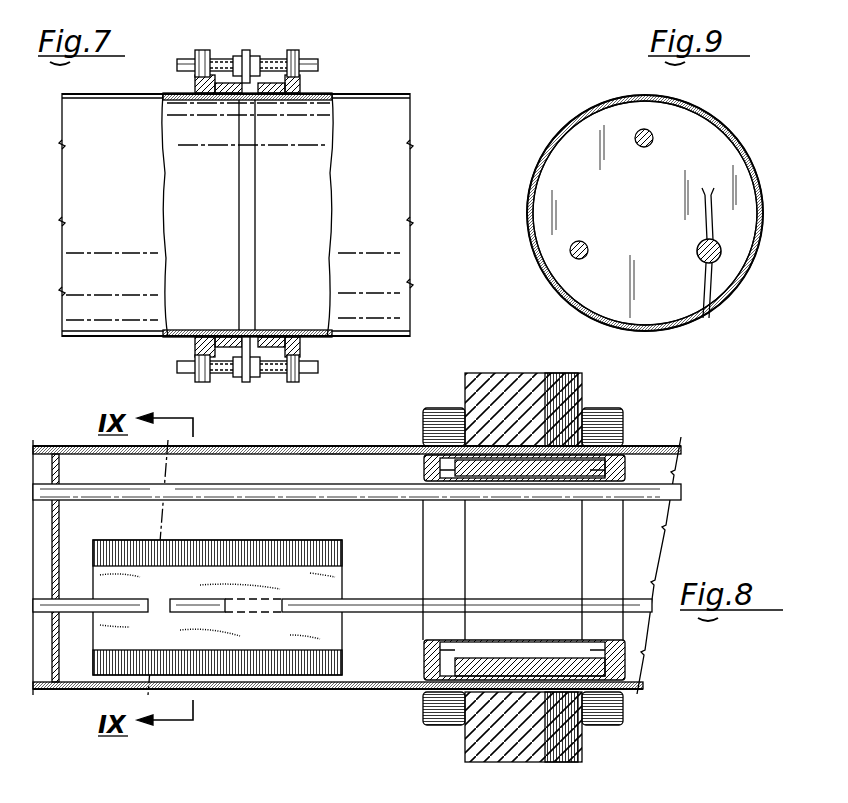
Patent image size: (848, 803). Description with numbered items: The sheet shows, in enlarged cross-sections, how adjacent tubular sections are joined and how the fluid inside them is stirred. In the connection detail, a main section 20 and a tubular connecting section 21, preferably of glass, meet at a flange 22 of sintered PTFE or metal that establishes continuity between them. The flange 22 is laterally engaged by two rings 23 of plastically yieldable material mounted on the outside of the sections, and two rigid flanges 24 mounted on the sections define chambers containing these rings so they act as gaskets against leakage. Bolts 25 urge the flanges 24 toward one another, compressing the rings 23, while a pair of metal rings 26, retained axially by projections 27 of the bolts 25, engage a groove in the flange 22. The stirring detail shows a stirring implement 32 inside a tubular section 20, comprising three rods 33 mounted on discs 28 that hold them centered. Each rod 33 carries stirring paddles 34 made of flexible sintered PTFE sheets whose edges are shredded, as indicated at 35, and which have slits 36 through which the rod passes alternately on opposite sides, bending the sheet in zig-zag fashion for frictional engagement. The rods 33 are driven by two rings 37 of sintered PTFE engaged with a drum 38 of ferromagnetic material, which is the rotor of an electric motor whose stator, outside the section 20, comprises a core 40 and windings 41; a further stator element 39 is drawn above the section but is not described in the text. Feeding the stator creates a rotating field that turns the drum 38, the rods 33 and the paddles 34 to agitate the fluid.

In FIG. 7, the main section 20 is at (108, 106).
In FIG. 8, the main section 20 is at (662, 446).
In FIG. 9, the main section 20 is at (594, 109).
In FIG. 7, the tubular connecting section 21 is at (400, 112).
In FIG. 7, the flange 22 is at (237, 346).
In FIG. 7, the ring 23 is at (300, 345).
In FIG. 7, the flange 24 is at (300, 80).
In FIG. 7, the bolt 25 is at (274, 63).
In FIG. 7, the metal rings 26 is at (254, 384).
In FIG. 7, the projection 27 is at (258, 56).
In FIG. 8, the disc 28 is at (69, 454).
In FIG. 9, the disc 28 is at (538, 178).
In FIG. 8, the stirring implement 32 is at (372, 478).
In FIG. 8, the rod 33 is at (644, 507).
In FIG. 8, the stirring paddle 34 is at (262, 625).
In FIG. 9, the stirring paddle 34 is at (714, 265).
In FIG. 8, the shredded edges 35 is at (298, 664).
In FIG. 9, the shredded edges 35 is at (707, 192).
In FIG. 8, the slit 36 is at (232, 614).
In FIG. 8, the ring 37 is at (423, 652).
In FIG. 8, the drum 38 is at (497, 670).
In FIG. 8, the block 39 is at (513, 368).
In FIG. 8, the core 40 is at (582, 752).
In FIG. 8, the windings 41 is at (623, 713).